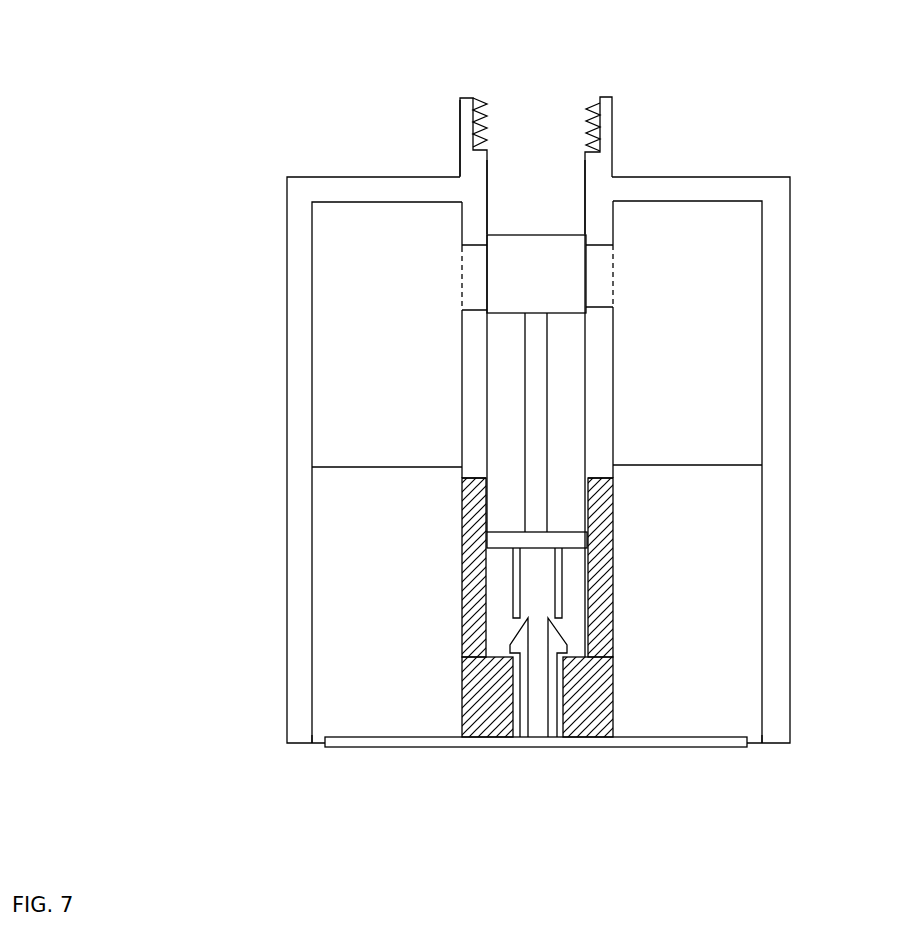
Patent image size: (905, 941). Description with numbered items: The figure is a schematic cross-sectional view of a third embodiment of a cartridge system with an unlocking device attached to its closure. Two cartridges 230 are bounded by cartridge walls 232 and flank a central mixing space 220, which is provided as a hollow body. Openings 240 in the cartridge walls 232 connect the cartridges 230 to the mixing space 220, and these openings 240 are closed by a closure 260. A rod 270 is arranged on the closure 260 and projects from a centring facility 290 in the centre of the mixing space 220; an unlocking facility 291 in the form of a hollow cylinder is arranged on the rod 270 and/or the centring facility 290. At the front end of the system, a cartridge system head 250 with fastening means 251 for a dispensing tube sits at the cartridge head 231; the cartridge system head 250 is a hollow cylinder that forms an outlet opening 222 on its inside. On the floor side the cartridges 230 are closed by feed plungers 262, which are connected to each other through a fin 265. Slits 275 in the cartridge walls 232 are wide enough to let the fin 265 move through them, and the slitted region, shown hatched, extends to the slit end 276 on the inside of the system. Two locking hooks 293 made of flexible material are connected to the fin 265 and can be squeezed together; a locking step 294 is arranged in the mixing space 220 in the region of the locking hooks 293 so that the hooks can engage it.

The outlet opening 222 is at (532, 92).
The fastening means 251 is at (472, 99).
The cartridge system head 250 is at (459, 120).
The mixing space 220 is at (533, 213).
The cartridge head 231 is at (396, 191).
The closure 260 is at (535, 260).
The openings 240 is at (597, 295).
The cartridges 230 is at (706, 328).
The rod 270 is at (535, 395).
The cartridge walls 232 is at (598, 408).
The slit end 276 is at (598, 477).
The slits 275 is at (597, 518).
The centring facility 290 is at (531, 538).
The unlocking facility 291 is at (553, 558).
The locking hooks 293 is at (548, 633).
The locking step 294 is at (566, 655).
The feed plungers 262 is at (661, 708).
The fin 265 is at (580, 747).